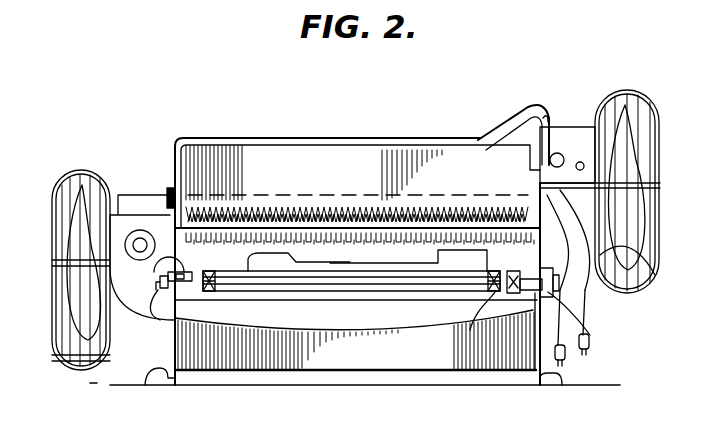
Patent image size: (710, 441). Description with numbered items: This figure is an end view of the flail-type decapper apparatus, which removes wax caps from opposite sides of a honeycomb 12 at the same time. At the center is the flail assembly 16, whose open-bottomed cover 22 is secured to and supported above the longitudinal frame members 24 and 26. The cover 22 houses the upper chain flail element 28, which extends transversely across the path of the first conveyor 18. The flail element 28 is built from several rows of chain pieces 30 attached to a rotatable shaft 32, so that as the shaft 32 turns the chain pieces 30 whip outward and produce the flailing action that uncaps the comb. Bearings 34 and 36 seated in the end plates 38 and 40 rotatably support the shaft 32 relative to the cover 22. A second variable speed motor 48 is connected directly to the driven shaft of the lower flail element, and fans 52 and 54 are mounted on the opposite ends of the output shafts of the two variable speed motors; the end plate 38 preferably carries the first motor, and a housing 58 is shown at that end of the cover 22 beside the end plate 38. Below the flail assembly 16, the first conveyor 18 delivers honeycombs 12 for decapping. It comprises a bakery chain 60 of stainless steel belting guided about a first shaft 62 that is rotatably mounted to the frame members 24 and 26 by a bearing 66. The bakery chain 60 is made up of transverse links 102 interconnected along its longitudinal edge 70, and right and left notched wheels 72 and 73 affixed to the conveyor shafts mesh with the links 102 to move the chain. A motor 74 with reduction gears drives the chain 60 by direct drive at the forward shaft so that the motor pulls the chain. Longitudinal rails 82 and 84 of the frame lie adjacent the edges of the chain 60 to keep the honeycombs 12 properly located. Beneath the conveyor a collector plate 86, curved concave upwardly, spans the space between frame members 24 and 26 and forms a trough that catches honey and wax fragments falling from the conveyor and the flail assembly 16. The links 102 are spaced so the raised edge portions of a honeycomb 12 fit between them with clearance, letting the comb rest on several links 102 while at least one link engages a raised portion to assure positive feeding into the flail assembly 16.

The honeycomb 12 is at (333, 265).
The flail assembly 16 is at (166, 189).
The first conveyor 18 is at (400, 340).
The open-bottomed cover 22 is at (292, 160).
The longitudinal frame member 24 is at (553, 376).
The longitudinal frame member 26 is at (165, 377).
The upper chain flail element 28 is at (357, 212).
The chain pieces 30 is at (398, 215).
The rotatable shaft 32 is at (470, 140).
The bearing 34 is at (613, 207).
The bearing 36 is at (186, 197).
The end plate 38 is at (550, 123).
The end plate 40 is at (170, 163).
The second variable speed motor 48 is at (140, 195).
The fan 52 is at (635, 283).
The fan 54 is at (68, 363).
The control box 58 is at (573, 130).
The bakery chain 60 is at (280, 292).
The first shaft 62 is at (527, 295).
The bearing 66 is at (590, 336).
The longitudinal edge 70 is at (507, 297).
The right notched wheel 72 is at (493, 293).
The left notched wheel 73 is at (204, 296).
The motor 74 is at (136, 246).
The longitudinal rail 82 is at (653, 267).
The longitudinal rail 84 is at (160, 275).
The collector plate 86 is at (300, 327).
The transverse links 102 is at (328, 291).